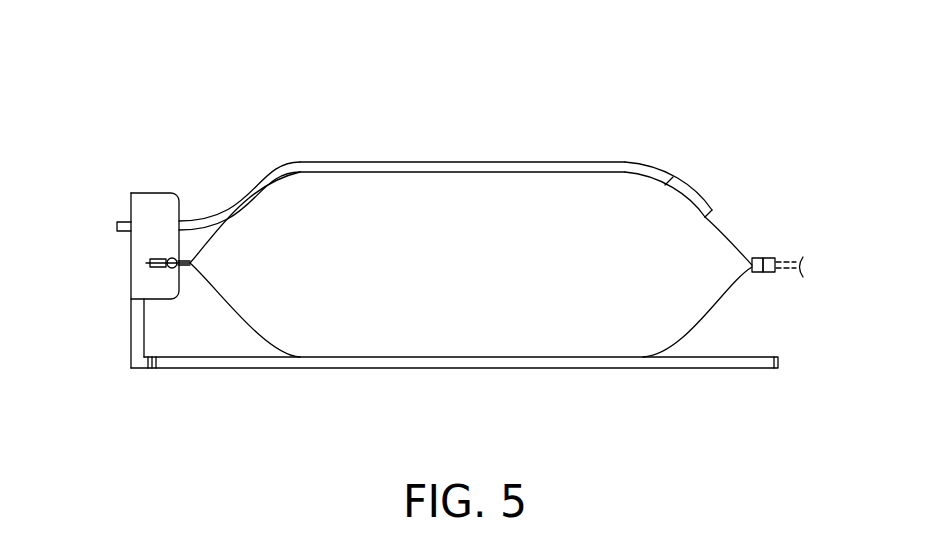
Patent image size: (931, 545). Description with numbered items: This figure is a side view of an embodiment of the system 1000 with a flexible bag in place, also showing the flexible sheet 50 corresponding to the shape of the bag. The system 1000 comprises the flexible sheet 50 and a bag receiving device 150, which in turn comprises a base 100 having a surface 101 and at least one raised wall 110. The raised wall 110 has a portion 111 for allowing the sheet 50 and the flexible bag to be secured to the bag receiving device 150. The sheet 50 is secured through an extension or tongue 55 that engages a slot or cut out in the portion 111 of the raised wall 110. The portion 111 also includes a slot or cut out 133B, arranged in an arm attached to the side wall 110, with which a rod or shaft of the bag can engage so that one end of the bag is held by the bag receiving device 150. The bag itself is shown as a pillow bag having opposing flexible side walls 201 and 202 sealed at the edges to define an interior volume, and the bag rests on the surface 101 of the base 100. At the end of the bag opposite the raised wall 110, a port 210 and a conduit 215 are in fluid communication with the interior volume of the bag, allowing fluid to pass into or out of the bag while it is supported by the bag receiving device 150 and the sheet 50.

The system 1000 is at (150, 120).
The flexible sheet 50 is at (453, 162).
The tongue 55 is at (180, 220).
The portion 111 is at (128, 204).
The slot 133B is at (150, 266).
The flexible side wall 202 is at (233, 310).
The flexible side wall 201 is at (727, 242).
The port 210 is at (772, 257).
The conduit 215 is at (788, 273).
The surface 101 is at (702, 357).
The raised wall 110 is at (138, 337).
The base 100 is at (217, 365).
The bag receiving device 150 is at (133, 385).